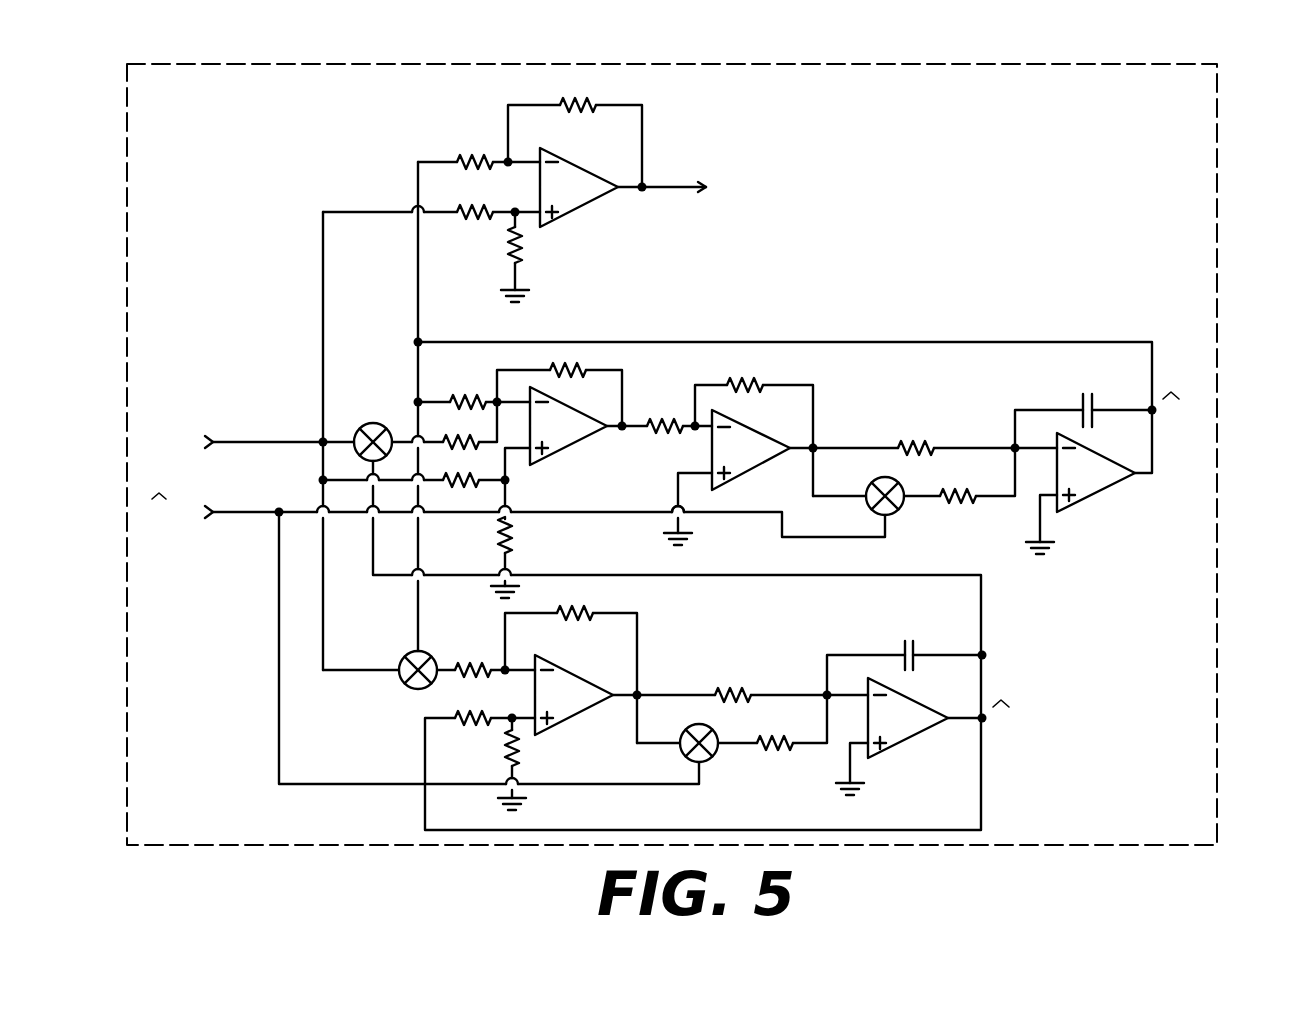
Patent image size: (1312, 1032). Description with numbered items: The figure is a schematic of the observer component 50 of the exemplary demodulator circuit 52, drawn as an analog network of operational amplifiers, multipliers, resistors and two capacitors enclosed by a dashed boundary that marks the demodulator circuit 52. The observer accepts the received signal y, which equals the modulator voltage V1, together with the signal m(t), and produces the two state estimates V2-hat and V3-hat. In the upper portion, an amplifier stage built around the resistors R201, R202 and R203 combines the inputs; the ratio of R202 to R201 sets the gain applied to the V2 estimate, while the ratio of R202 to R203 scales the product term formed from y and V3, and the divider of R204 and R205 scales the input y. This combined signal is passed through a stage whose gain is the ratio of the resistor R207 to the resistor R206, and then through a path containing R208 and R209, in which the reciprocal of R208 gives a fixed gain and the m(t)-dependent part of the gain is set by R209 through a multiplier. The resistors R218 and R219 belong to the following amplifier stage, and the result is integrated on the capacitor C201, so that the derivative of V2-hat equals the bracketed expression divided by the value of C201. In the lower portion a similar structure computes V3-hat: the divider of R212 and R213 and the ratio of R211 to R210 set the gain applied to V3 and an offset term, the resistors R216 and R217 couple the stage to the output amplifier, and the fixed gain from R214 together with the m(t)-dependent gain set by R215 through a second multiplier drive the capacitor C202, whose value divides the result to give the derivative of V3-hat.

The observer component 50 is at (812, 247).
The demodulator circuit 52 is at (1217, 218).
The resistor R201 is at (470, 153).
The resistor R202 is at (577, 96).
The resistor R203 is at (470, 203).
The resistor R204 is at (540, 245).
The resistor R205 is at (461, 392).
The resistor R206 is at (567, 361).
The resistor R207 is at (456, 432).
The resistor R208 is at (456, 494).
The resistor R209 is at (533, 535).
The resistor R210 is at (468, 660).
The resistor R211 is at (574, 601).
The resistor R212 is at (468, 708).
The resistor R213 is at (538, 750).
The resistor R214 is at (916, 438).
The resistor R215 is at (956, 486).
The resistor R216 is at (731, 683).
The resistor R217 is at (771, 730).
The resistor R218 is at (663, 415).
The resistor R219 is at (743, 376).
The capacitor C201 is at (1083, 399).
The capacitor C202 is at (910, 644).